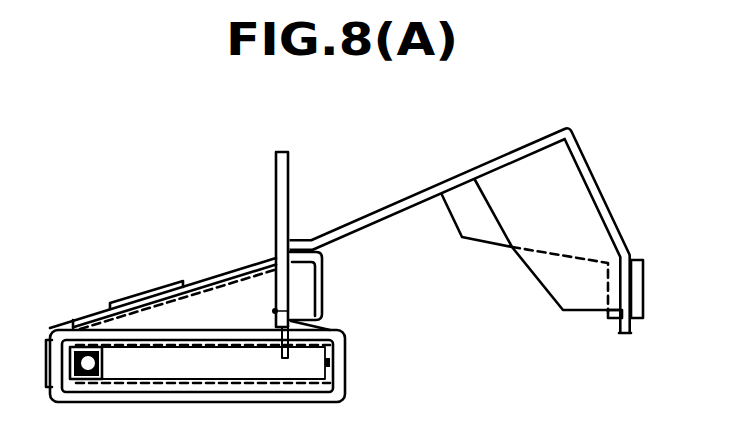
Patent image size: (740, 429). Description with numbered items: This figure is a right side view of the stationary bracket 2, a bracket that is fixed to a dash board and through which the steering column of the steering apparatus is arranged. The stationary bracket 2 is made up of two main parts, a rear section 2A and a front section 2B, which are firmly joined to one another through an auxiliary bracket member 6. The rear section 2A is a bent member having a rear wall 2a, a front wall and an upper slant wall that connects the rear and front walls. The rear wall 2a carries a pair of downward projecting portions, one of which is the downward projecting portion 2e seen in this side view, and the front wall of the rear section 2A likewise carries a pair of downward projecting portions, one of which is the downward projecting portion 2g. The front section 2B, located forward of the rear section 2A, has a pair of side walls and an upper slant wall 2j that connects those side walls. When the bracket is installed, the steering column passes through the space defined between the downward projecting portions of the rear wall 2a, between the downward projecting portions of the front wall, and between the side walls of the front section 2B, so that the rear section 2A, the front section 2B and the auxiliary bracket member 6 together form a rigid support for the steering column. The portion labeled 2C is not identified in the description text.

The stationary bracket 2 is at (488, 196).
The rear section 2A is at (612, 180).
The rear wall 2a is at (625, 240).
The downward projecting portion 2e is at (632, 293).
The arm portion 2C is at (381, 205).
The auxiliary bracket member 6 is at (276, 182).
The upper slant wall 2j is at (210, 278).
The front section 2B is at (126, 290).
The downward projecting portion 2g is at (318, 291).